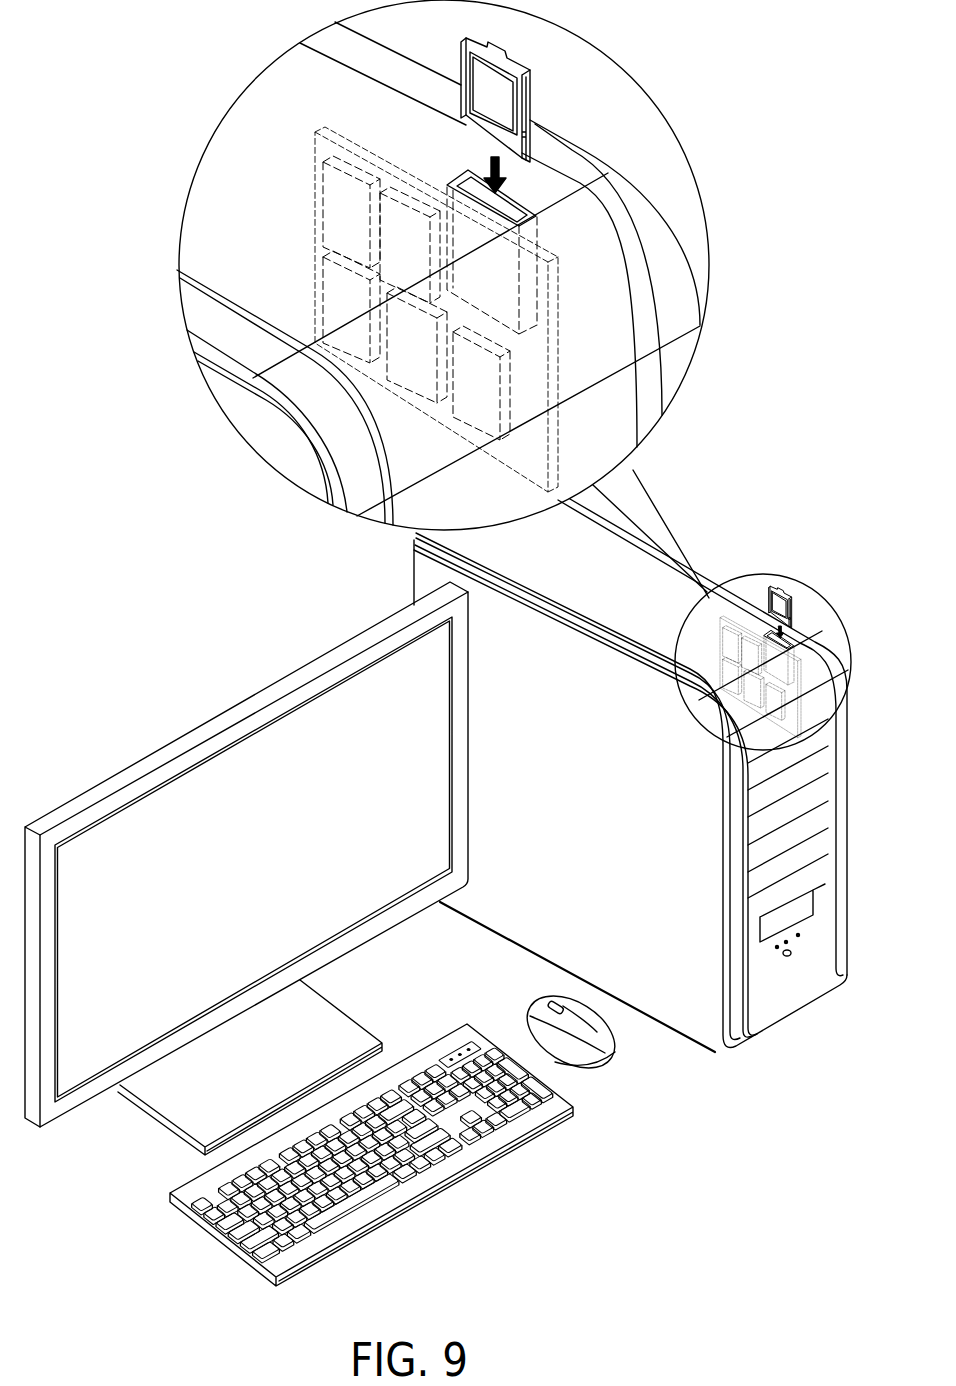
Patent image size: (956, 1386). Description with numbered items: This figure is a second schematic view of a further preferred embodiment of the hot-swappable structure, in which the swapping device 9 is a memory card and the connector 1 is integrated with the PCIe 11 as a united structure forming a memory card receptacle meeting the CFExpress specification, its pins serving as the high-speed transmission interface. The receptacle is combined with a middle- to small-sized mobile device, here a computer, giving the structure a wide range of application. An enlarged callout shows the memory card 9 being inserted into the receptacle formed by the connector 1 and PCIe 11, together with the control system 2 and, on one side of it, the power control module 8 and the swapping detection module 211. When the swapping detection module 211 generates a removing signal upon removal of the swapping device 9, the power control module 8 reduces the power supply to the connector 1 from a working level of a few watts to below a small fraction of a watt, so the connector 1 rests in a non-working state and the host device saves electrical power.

The connector 1 is at (545, 243).
The Peripheral Component Interconnect Express (PCIe) 11 is at (545, 243).
The control system 2 is at (318, 250).
The swapping detection module 211 is at (376, 228).
The power control module 8 is at (315, 172).
The swapping device 9 is at (530, 88).